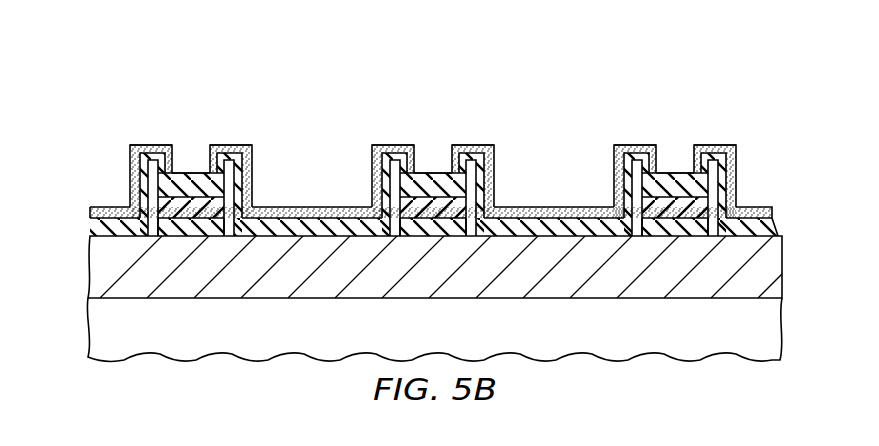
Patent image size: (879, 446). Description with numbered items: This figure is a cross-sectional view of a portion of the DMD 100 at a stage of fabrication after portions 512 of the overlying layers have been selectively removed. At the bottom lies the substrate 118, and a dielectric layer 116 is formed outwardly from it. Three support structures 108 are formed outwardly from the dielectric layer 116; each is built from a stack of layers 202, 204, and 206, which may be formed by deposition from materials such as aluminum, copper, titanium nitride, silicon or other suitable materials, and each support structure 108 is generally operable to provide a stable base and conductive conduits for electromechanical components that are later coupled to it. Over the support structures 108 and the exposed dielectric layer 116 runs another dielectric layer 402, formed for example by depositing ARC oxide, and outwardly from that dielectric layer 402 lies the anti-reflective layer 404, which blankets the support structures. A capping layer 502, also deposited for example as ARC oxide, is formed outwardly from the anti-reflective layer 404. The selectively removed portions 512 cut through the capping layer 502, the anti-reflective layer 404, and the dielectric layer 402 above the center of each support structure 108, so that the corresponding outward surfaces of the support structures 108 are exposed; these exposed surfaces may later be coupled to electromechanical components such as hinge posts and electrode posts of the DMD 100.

The DMD 100 is at (288, 70).
The support structures 108 is at (424, 107).
The dielectric layer 116 is at (90, 282).
The substrate 118 is at (450, 340).
The layer 202 is at (192, 232).
The layer 204 is at (166, 212).
The layer 206 is at (218, 185).
The dielectric layer 402 is at (90, 226).
The anti-reflective layer 404 is at (775, 218).
The capping layer 502 is at (236, 147).
The selectively removed portions 512 is at (433, 136).